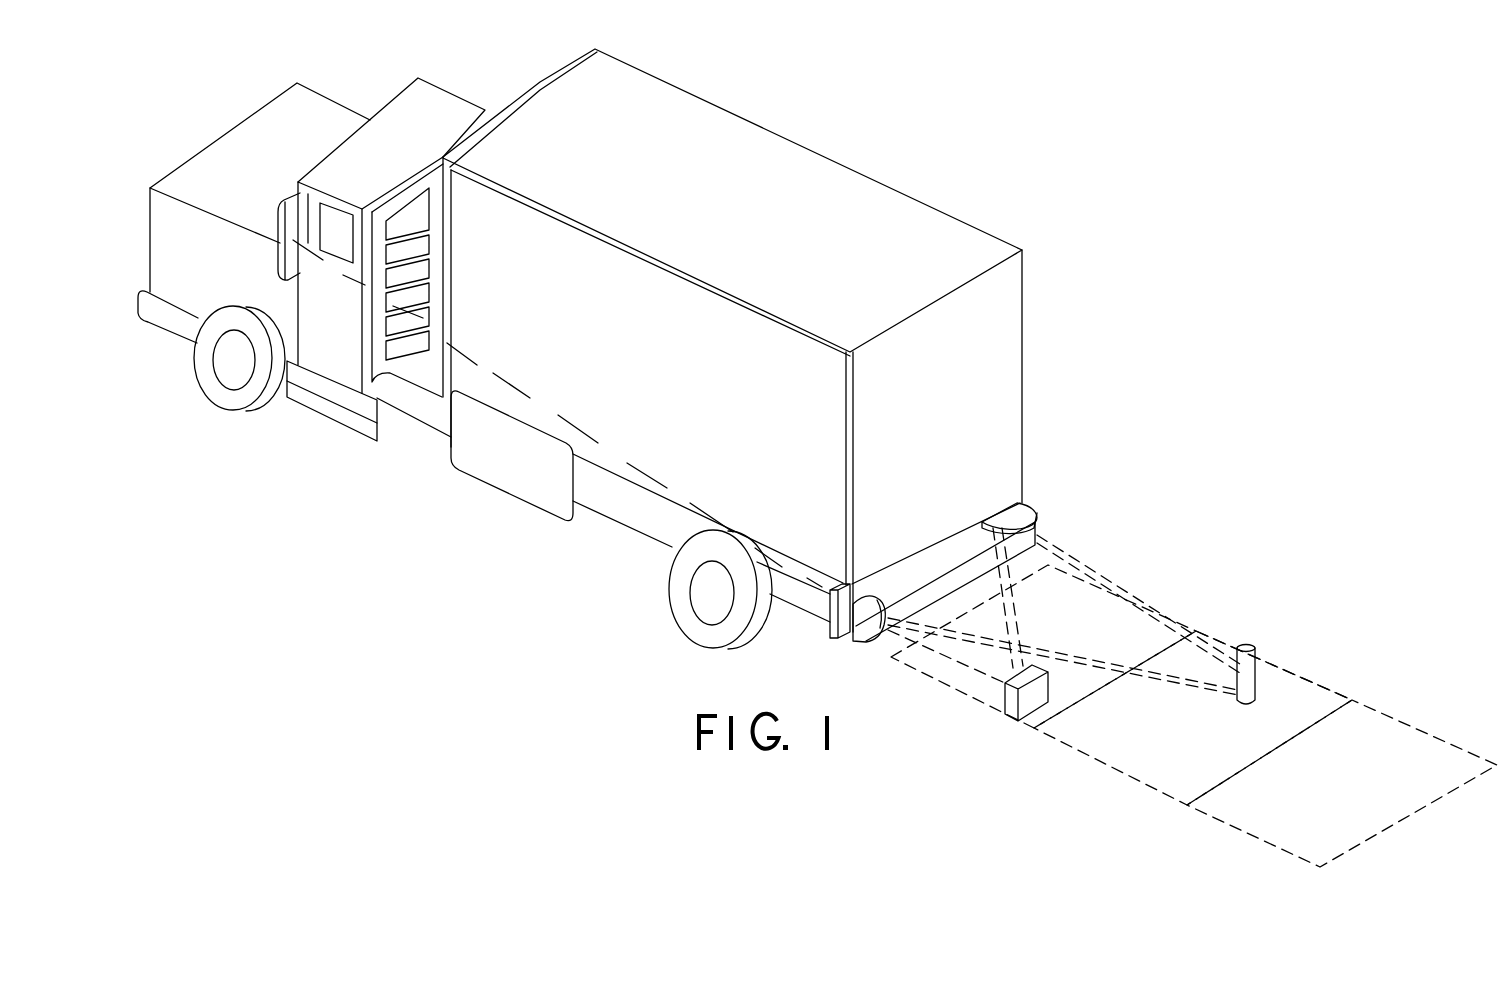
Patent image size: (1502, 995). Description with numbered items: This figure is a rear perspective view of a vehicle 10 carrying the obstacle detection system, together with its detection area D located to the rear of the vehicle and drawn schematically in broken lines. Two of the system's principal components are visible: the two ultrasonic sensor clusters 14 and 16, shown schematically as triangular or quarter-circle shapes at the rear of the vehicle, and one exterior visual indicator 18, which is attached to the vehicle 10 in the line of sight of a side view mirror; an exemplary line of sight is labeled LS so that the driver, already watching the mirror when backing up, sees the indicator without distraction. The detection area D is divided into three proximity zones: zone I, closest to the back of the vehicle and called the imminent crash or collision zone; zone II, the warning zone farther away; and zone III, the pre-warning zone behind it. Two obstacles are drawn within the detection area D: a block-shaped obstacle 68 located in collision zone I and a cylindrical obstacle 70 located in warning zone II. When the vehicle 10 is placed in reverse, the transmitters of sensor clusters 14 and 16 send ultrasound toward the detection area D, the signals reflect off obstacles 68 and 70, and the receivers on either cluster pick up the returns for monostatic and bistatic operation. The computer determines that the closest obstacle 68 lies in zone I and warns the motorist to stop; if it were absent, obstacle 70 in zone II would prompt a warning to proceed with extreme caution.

The vehicle 10 is at (729, 112).
The sensor cluster 14 is at (870, 613).
The sensor cluster 16 is at (1020, 513).
The exterior visual indicator 18 is at (828, 634).
The obstacle 68 is at (1013, 703).
The obstacle 70 is at (1257, 668).
The line of sight LS is at (517, 388).
The detection area D is at (1300, 670).
The proximity zone I is at (1043, 646).
The proximity zone II is at (1193, 718).
The proximity zone III is at (1342, 783).